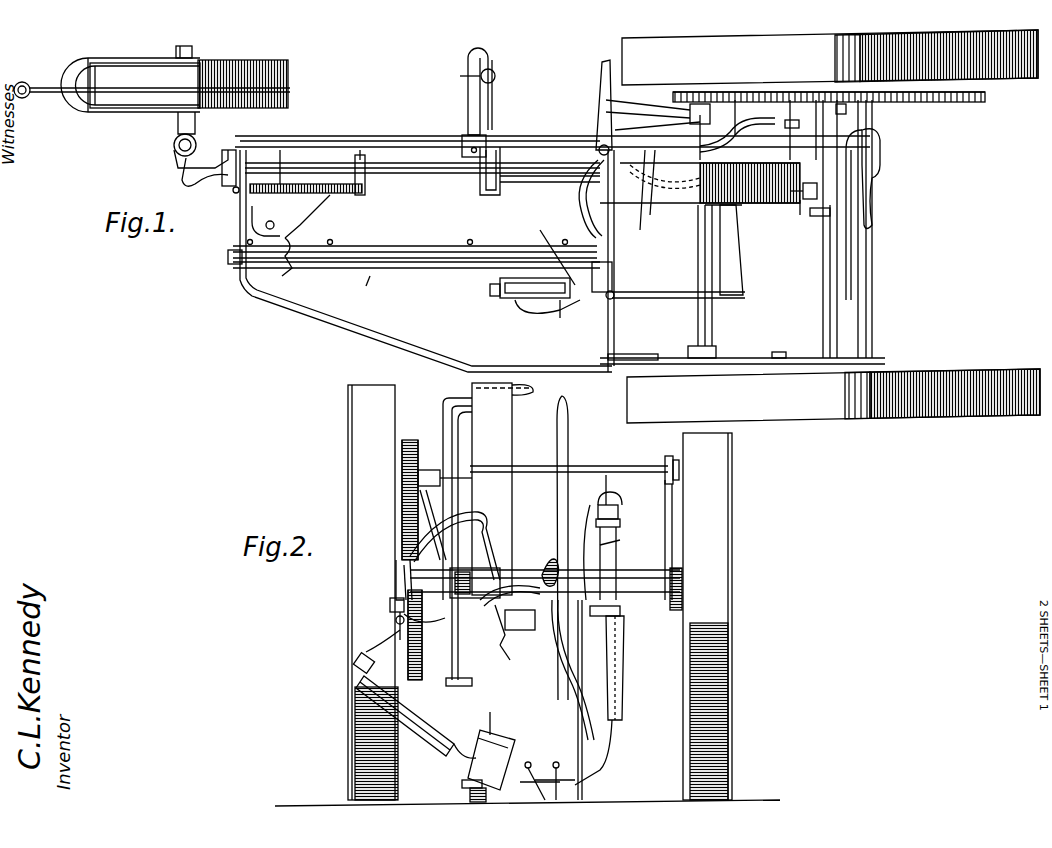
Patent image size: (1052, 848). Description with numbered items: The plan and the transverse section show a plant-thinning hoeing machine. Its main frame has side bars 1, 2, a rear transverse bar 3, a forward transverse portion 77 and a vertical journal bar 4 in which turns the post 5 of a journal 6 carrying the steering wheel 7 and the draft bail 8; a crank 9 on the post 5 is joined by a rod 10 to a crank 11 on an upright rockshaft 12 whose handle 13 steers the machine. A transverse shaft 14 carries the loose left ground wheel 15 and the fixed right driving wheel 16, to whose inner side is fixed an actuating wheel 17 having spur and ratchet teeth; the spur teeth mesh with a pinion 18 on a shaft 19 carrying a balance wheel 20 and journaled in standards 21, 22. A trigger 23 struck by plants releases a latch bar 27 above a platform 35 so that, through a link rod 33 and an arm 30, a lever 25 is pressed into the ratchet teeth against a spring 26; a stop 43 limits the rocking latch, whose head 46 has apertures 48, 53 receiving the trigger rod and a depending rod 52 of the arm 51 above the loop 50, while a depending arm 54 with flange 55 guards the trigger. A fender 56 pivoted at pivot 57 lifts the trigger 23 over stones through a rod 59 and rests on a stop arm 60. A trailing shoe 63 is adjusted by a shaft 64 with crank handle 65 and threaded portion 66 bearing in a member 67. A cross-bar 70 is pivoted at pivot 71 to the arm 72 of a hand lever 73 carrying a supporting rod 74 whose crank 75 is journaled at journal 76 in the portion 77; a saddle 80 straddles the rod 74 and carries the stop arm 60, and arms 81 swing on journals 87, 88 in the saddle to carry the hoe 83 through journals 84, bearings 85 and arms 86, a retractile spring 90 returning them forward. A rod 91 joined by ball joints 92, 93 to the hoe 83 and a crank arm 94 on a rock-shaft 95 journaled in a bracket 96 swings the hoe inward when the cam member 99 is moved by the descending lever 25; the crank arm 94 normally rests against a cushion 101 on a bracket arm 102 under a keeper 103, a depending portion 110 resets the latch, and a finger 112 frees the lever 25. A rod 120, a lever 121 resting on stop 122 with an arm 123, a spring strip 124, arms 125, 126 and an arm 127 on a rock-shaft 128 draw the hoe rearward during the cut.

In FIG. 1, the side bar 1 is at (536, 136).
In FIG. 2, the side bar 2 is at (684, 580).
In FIG. 1, the rear transverse bar 3 is at (868, 286).
In FIG. 1, the journal bar 4 is at (172, 156).
In FIG. 1, the turning post 5 is at (174, 144).
In FIG. 1, the journal 6 is at (190, 48).
In FIG. 1, the steering wheel 7 is at (272, 75).
In FIG. 1, the bail 8 is at (78, 118).
In FIG. 1, the crank 9 is at (183, 178).
In FIG. 2, the crank 9 is at (636, 466).
In FIG. 1, the rod 10 is at (404, 166).
In FIG. 2, the rod 10 is at (458, 678).
In FIG. 2, the crank 11 is at (456, 686).
In FIG. 2, the upright rockshaft 12 is at (425, 635).
In FIG. 1, the handle 13 is at (880, 188).
In FIG. 1, the transverse shaft 14 is at (822, 282).
In FIG. 1, the left hand ground wheel 15 is at (990, 372).
In FIG. 2, the left hand ground wheel 15 is at (720, 655).
In FIG. 1, the right hand ground and driving wheel 16 is at (958, 34).
In FIG. 2, the right hand ground and driving wheel 16 is at (352, 600).
In FIG. 1, the actuating wheel 17 is at (965, 100).
In FIG. 1, the pinion 18 is at (705, 100).
In FIG. 2, the pinion 18 is at (402, 482).
In FIG. 1, the transverse shaft 19 is at (714, 319).
In FIG. 1, the balance wheel 20 is at (728, 205).
In FIG. 2, the balance wheel 20 is at (512, 433).
In FIG. 1, the standard 21 is at (758, 358).
In FIG. 2, the standard 21 is at (676, 520).
In FIG. 1, the standard 22 is at (660, 105).
In FIG. 2, the standard 22 is at (404, 522).
In FIG. 2, the trigger 23 is at (604, 756).
In FIG. 1, the lever 25 is at (634, 100).
In FIG. 2, the lever 25 is at (402, 575).
In FIG. 1, the spring 26 is at (790, 100).
In FIG. 1, the latch bar 27 is at (542, 312).
In FIG. 2, the latch bar 27 is at (591, 700).
In FIG. 1, the arm 30 is at (744, 262).
In FIG. 1, the link rod 33 is at (668, 292).
In FIG. 1, the platform 35 is at (560, 312).
In FIG. 2, the platform 35 is at (620, 612).
In FIG. 1, the stop 43 is at (555, 265).
In FIG. 2, the lateral head 46 is at (622, 540).
In FIG. 2, the aperture 48 is at (620, 527).
In FIG. 2, the loop 50 is at (622, 504).
In FIG. 2, the arm 51 is at (606, 490).
In FIG. 2, the depending rod 52 is at (590, 520).
In FIG. 2, the aperture 53 is at (612, 545).
In FIG. 2, the depending arm 54 is at (610, 660).
In FIG. 2, the flange 55 is at (622, 707).
In FIG. 1, the fender 56 is at (428, 270).
In FIG. 2, the fender 56 is at (590, 768).
In FIG. 1, the pivot 57 is at (228, 255).
In FIG. 1, the rod 59 is at (492, 290).
In FIG. 1, the stop arm 60 is at (368, 280).
In FIG. 2, the stop arm 60 is at (570, 690).
In FIG. 1, the trailing shoe 63 is at (352, 165).
In FIG. 1, the shaft 64 is at (318, 182).
In FIG. 1, the crank handle 65 is at (288, 268).
In FIG. 1, the threaded portion 66 is at (306, 220).
In FIG. 2, the threaded portion 66 is at (541, 698).
In FIG. 1, the member 67 is at (248, 272).
In FIG. 1, the cross-bar 70 is at (615, 338).
In FIG. 2, the pivot 71 is at (510, 590).
In FIG. 2, the arm 72 is at (525, 625).
In FIG. 2, the hand lever 73 is at (547, 548).
In FIG. 2, the supporting rod 74 is at (545, 570).
In FIG. 1, the crank 75 is at (255, 218).
In FIG. 1, the journal 76 is at (237, 200).
In FIG. 1, the forward transverse portion 77 is at (240, 228).
In FIG. 1, the saddle 80 is at (405, 252).
In FIG. 2, the saddle 80 is at (600, 586).
In FIG. 1, the arm 81 is at (349, 227).
In FIG. 2, the hoe 83 is at (534, 781).
In FIG. 2, the journals 84 is at (505, 735).
In FIG. 2, the bearings 85 is at (492, 716).
In FIG. 2, the arms 86 is at (462, 736).
In FIG. 1, the journal portion 87 is at (559, 221).
In FIG. 1, the journal portion 88 is at (612, 268).
In FIG. 1, the retractile spring 90 is at (278, 183).
In FIG. 1, the rod 91 is at (468, 100).
In FIG. 2, the rod 91 is at (380, 702).
In FIG. 2, the ball and socket joint 92 is at (465, 780).
In FIG. 1, the ball and socket joint 93 is at (483, 48).
In FIG. 2, the ball and socket joint 93 is at (360, 672).
In FIG. 1, the crank arm 94 is at (492, 52).
In FIG. 2, the crank arm 94 is at (368, 650).
In FIG. 1, the rock-shaft 95 is at (540, 184).
In FIG. 1, the journal bracket 96 is at (492, 196).
In FIG. 2, the journal bracket 96 is at (475, 583).
In FIG. 2, the cam member 99 is at (470, 520).
In FIG. 1, the cushion 101 is at (496, 74).
In FIG. 2, the cushion 101 is at (395, 625).
In FIG. 1, the bracket arm 102 is at (494, 100).
In FIG. 2, the bracket arm 102 is at (390, 605).
In FIG. 1, the keeper 103 is at (478, 75).
In FIG. 2, the keeper 103 is at (386, 662).
In FIG. 1, the depending portion 110 is at (608, 203).
In FIG. 2, the finger 112 is at (395, 582).
In FIG. 1, the rod 120 is at (800, 205).
In FIG. 2, the rod 120 is at (505, 662).
In FIG. 1, the lever 121 is at (812, 216).
In FIG. 1, the stop 122 is at (818, 192).
In FIG. 1, the arm 123 is at (848, 110).
In FIG. 1, the spring strip 124 is at (805, 100).
In FIG. 1, the arm 125 is at (742, 144).
In FIG. 2, the arm 125 is at (440, 470).
In FIG. 1, the detent-carrying arm 126 is at (735, 98).
In FIG. 1, the arm 127 is at (700, 183).
In FIG. 1, the rock-shaft 128 is at (649, 190).